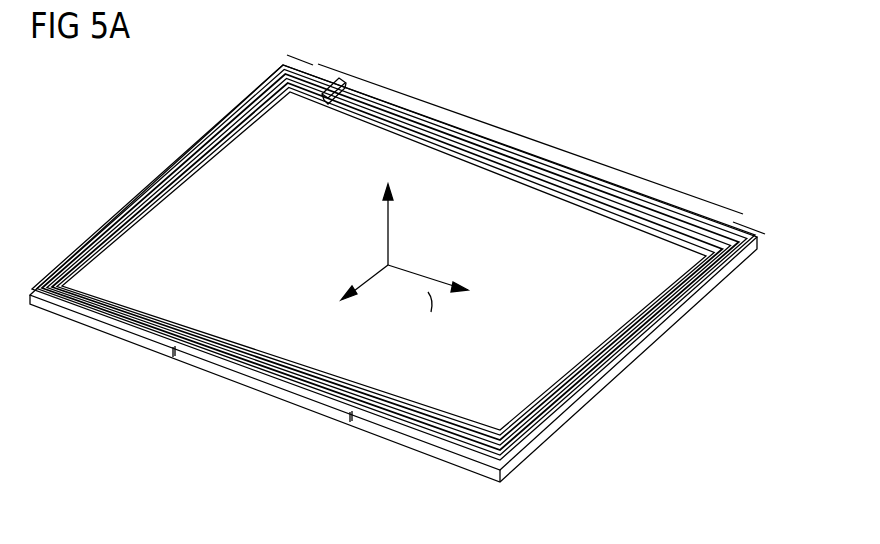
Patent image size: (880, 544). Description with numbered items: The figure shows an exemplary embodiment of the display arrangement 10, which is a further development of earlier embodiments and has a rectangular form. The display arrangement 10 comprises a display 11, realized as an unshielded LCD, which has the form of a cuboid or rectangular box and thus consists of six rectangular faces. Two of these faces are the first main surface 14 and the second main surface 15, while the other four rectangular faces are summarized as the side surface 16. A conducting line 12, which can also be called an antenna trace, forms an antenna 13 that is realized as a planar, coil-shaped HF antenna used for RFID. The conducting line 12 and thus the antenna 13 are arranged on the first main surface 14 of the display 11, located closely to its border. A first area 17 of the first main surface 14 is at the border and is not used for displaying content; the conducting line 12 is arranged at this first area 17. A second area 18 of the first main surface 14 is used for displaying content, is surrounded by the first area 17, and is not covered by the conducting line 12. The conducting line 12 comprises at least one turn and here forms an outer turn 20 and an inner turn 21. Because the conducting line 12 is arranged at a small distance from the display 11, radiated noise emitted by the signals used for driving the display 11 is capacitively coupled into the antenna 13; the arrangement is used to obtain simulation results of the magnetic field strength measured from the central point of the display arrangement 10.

The display arrangement 10 is at (122, 124).
The display 11 is at (119, 340).
The conducting line 12 is at (672, 370).
The antenna 13 is at (712, 400).
The first main surface 14 is at (643, 300).
The second main surface 15 is at (381, 440).
The side surface 16 is at (448, 463).
The first area 17 is at (302, 58).
The second area 18 is at (538, 137).
The outer turn 20 is at (616, 364).
The inner turn 21 is at (602, 392).